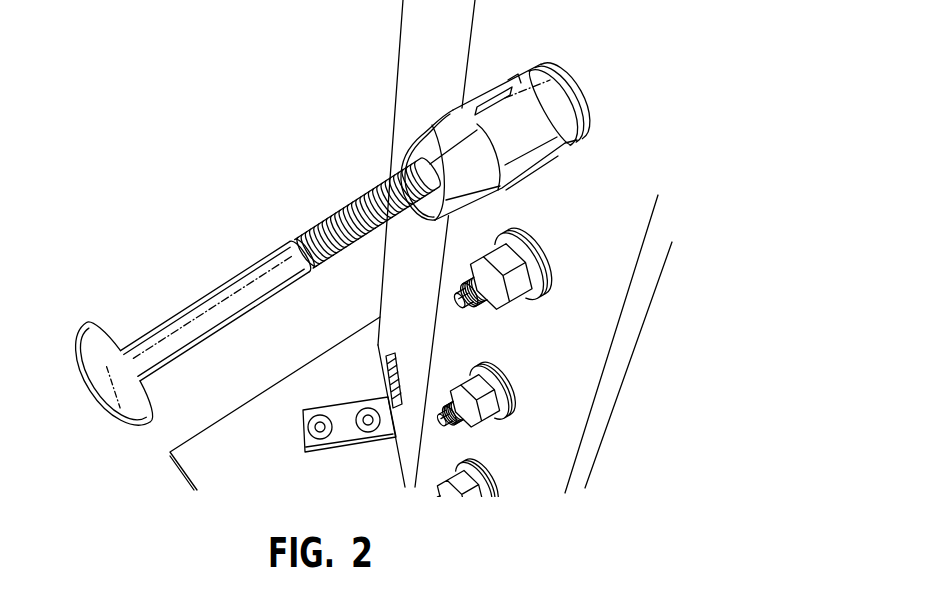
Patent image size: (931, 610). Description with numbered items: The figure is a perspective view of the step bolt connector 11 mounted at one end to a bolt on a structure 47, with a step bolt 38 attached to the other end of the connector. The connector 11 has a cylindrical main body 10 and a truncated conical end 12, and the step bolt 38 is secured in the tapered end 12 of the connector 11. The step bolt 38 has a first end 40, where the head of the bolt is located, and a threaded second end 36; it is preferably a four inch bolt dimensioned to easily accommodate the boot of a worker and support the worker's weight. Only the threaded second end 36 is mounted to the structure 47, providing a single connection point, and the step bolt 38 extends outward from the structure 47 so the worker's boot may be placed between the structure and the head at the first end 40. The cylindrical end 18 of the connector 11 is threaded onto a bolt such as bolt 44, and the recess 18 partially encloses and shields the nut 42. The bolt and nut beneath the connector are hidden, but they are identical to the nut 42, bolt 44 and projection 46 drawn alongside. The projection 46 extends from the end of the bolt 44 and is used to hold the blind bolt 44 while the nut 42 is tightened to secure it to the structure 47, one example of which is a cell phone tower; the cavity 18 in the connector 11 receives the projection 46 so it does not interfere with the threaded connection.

The cylindrical main body 10 is at (468, 110).
The step bolt connector 11 is at (532, 132).
The truncated conical end 12 is at (432, 139).
The cylindrical end 18 is at (518, 78).
The threaded second end 36 is at (392, 176).
The step bolt 38 is at (258, 264).
The first end 40 is at (88, 322).
The nut 42 is at (516, 301).
The bolt 44 is at (488, 311).
The projection 46 is at (455, 306).
The structure 47 is at (414, 264).